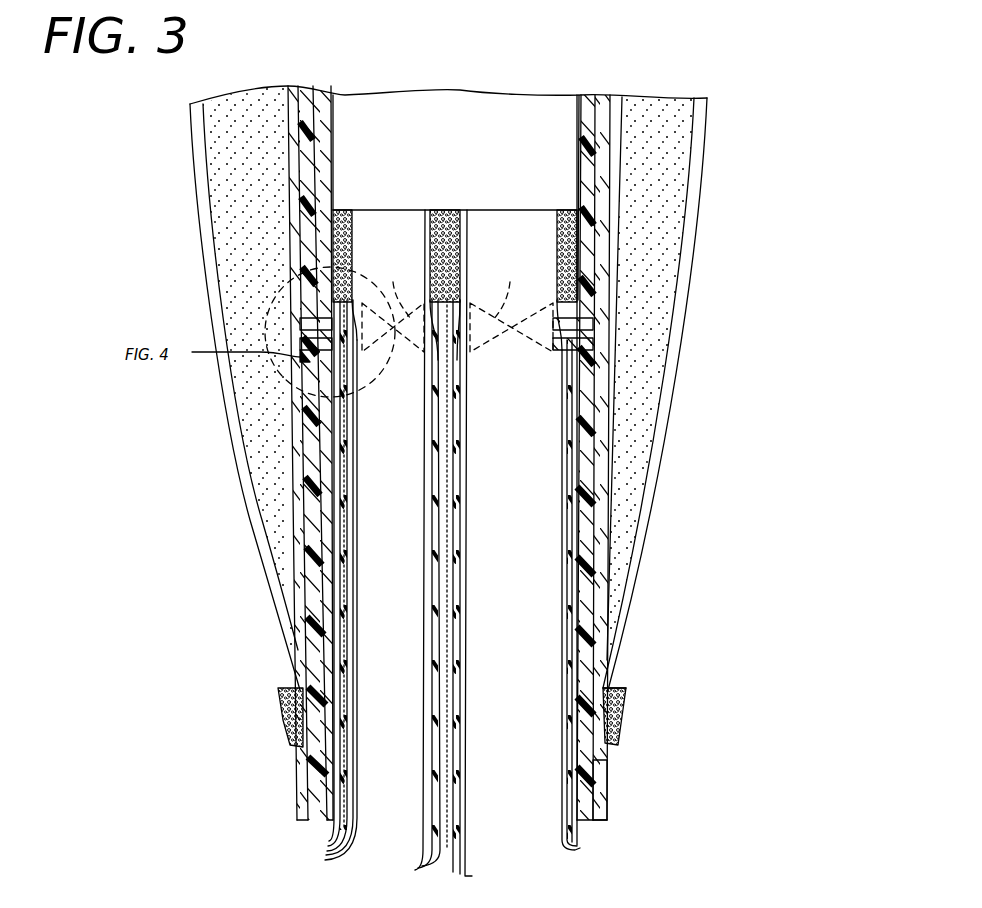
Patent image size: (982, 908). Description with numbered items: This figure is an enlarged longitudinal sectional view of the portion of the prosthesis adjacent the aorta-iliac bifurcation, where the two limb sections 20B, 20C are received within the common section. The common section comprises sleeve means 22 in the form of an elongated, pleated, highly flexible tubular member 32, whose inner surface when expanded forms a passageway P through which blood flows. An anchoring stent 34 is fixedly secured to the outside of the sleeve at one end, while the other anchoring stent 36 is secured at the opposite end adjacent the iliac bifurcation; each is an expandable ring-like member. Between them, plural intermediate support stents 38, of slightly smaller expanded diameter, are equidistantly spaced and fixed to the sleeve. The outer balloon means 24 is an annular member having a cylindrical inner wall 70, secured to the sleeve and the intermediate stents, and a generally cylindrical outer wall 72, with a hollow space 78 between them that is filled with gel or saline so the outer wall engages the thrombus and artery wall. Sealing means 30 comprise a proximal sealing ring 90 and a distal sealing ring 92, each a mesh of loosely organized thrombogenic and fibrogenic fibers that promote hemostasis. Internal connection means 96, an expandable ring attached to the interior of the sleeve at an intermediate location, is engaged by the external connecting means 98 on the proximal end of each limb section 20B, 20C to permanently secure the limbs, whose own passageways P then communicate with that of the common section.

The passageway P is at (490, 122).
The limb section 20B is at (385, 243).
The limb section 20C is at (510, 243).
The sleeve means 22 is at (337, 124).
The outer balloon means 24 is at (712, 135).
The sealing means 30 is at (633, 683).
The tubular member 32 is at (335, 139).
The expandable tubular stent 34 is at (454, 285).
The expandable tubular stent 36 is at (613, 773).
The expandable tubular stent 38 is at (333, 101).
The inner wall 70 is at (290, 138).
The outer wall 72 is at (203, 205).
The hollow space 78 is at (240, 156).
The sealing ring 90 is at (333, 245).
The sealing ring 92 is at (620, 720).
The internal connection means 96 is at (300, 357).
The external connecting means 98 is at (340, 298).